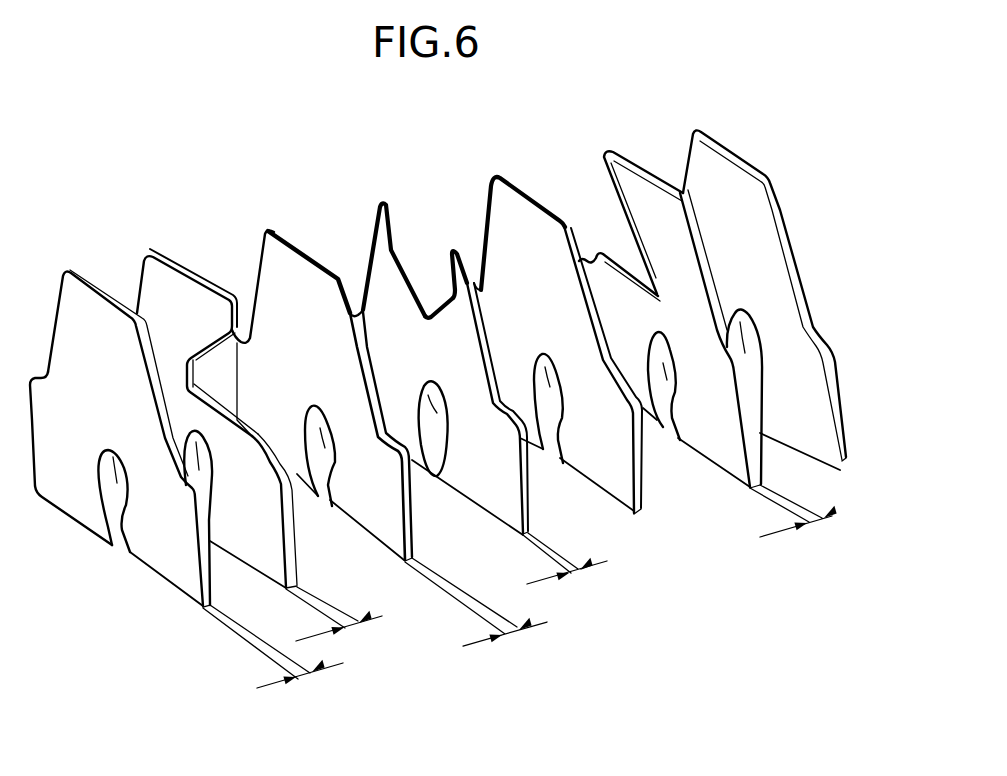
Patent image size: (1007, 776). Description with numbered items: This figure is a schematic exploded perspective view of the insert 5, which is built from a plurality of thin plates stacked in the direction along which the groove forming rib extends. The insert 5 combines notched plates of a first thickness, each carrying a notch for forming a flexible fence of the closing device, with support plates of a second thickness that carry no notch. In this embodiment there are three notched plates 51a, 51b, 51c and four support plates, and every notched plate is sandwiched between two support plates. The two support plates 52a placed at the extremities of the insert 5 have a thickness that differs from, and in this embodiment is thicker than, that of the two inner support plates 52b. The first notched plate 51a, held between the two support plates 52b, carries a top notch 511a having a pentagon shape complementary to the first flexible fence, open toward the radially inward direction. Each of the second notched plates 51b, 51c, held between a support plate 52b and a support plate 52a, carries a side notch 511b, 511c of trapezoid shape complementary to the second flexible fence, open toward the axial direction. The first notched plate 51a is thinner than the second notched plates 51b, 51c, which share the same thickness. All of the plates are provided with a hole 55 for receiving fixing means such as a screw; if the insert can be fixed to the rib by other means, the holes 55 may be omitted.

The insert 5 is at (201, 171).
The first notched plate 51a is at (372, 240).
The second notched plate 51b is at (145, 257).
The second notched plate 51c is at (613, 153).
The top notch 511a is at (428, 305).
The side notch 511b is at (205, 385).
The side notch 511c is at (650, 267).
The support plate 52a is at (77, 527).
The support plate 52b is at (275, 230).
The hole 55 is at (118, 452).